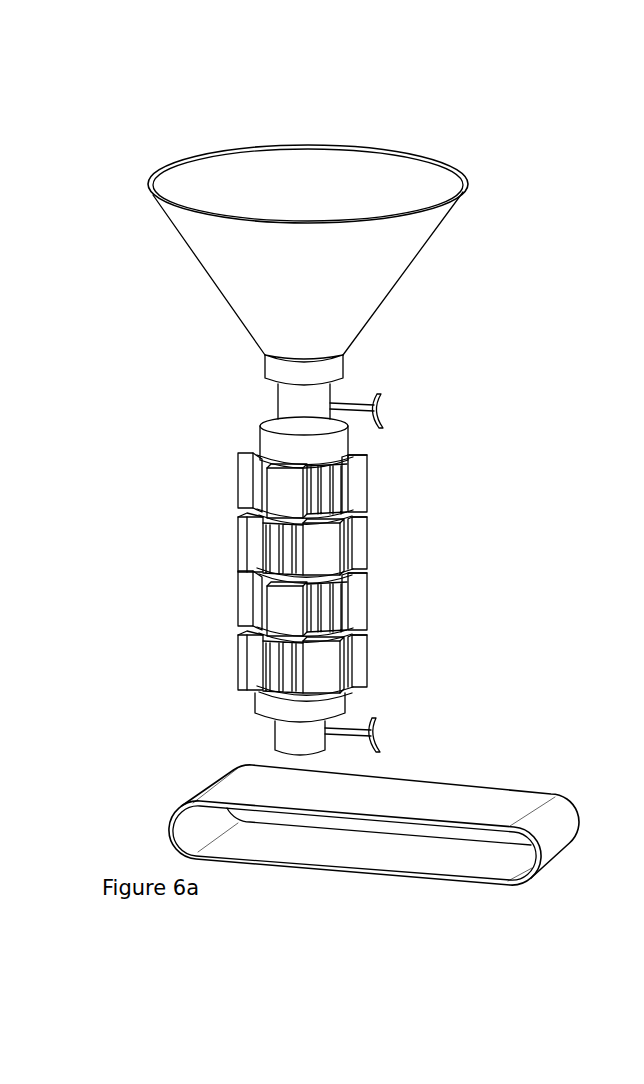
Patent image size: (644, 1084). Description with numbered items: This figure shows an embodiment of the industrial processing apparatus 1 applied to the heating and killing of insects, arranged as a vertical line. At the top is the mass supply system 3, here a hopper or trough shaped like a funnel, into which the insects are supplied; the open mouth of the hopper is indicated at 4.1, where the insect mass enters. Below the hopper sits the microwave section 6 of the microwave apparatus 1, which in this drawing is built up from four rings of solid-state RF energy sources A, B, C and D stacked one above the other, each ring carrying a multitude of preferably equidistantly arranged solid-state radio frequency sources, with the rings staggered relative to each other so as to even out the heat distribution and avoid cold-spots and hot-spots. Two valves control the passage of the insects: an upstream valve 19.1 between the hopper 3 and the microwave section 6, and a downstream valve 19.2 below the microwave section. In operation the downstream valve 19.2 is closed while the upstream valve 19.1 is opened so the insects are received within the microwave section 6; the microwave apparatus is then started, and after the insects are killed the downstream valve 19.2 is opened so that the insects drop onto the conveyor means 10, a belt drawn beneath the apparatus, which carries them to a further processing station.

The mass supply system 3 is at (334, 261).
The funnel inlet opening 4.1 is at (357, 185).
The upper valve 19.1 is at (395, 403).
The processing apparatus 1 is at (328, 586).
The microwave section 6 is at (328, 586).
The solid-state RF energy source A is at (357, 488).
The solid-state RF energy source B is at (358, 546).
The solid-state RF energy source C is at (357, 608).
The solid-state RF energy source D is at (357, 662).
The lower valve 19.2 is at (390, 732).
The conveyor means 10 is at (240, 788).